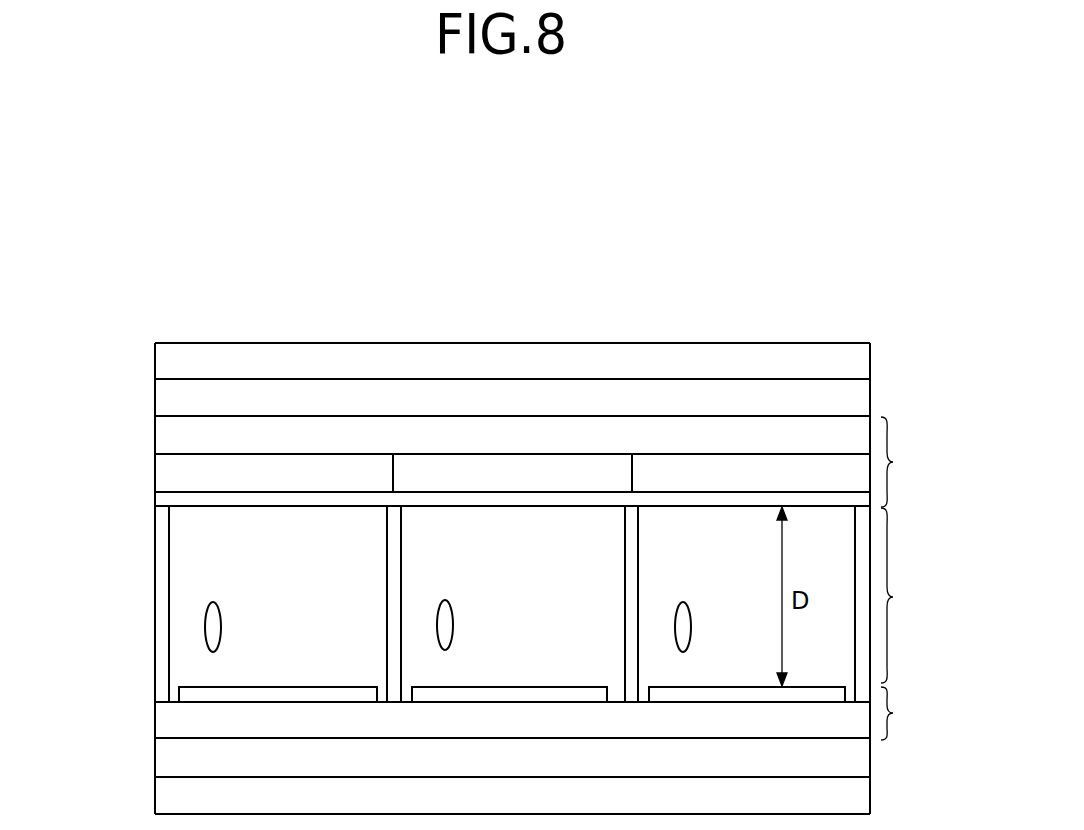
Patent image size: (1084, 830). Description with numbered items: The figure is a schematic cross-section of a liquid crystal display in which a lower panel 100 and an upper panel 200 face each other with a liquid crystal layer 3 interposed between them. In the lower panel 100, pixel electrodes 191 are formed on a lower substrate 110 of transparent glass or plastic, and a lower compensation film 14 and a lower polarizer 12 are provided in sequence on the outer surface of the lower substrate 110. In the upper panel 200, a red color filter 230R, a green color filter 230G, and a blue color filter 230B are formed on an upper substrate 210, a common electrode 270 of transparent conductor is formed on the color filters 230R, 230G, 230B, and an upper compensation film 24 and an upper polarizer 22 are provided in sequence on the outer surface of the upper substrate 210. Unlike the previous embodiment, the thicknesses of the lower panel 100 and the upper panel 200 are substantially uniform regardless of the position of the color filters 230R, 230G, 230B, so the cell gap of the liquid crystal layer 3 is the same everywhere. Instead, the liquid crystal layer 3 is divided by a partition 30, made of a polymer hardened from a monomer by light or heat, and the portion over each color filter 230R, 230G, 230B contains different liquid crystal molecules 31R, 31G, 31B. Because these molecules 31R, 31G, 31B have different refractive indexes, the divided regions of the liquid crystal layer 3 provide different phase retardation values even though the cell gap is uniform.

The upper polarizer 22 is at (178, 362).
The upper compensation film 24 is at (178, 399).
The upper substrate 210 is at (178, 436).
The red color filter 230R is at (272, 472).
The green color filter 230G is at (509, 472).
The blue color filter 230B is at (697, 472).
The common electrode 270 is at (178, 500).
The partition 30 is at (165, 581).
The pixel electrode 191 is at (213, 695).
The liquid crystal molecule 31R is at (221, 627).
The liquid crystal molecule 31G is at (453, 625).
The liquid crystal molecule 31B is at (691, 627).
The lower substrate 110 is at (178, 719).
The lower compensation film 14 is at (178, 756).
The lower polarizer 12 is at (178, 794).
The upper panel 200 is at (911, 462).
The liquid crystal layer 3 is at (900, 595).
The lower panel 100 is at (911, 713).